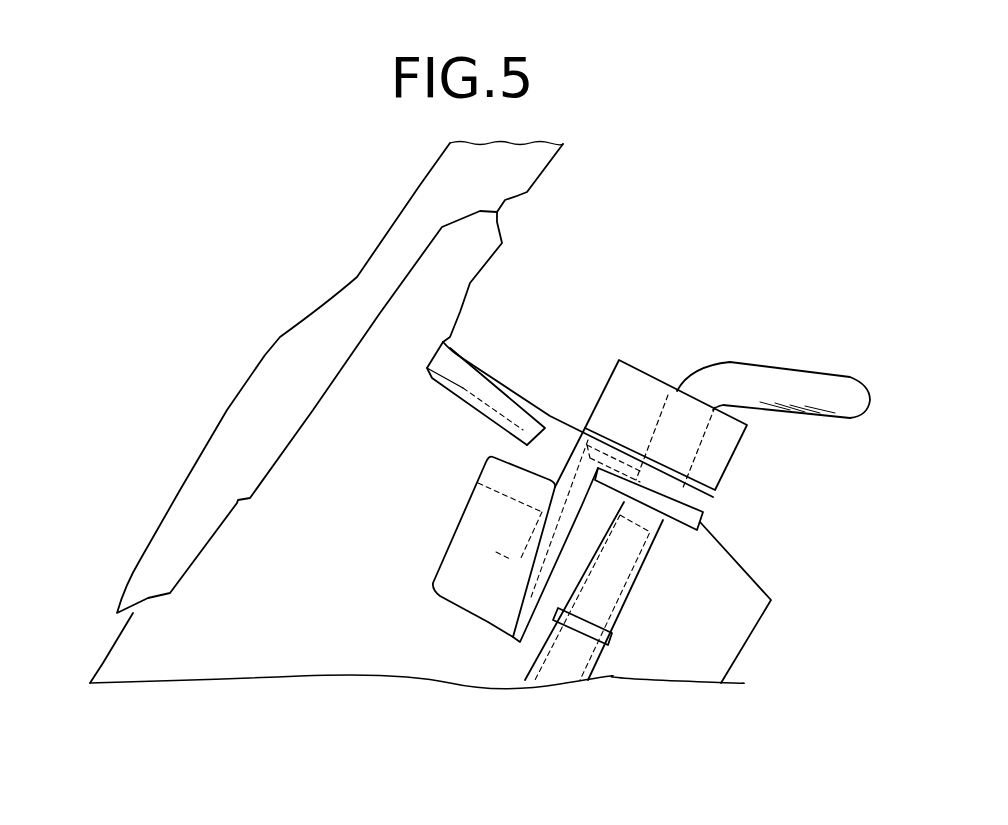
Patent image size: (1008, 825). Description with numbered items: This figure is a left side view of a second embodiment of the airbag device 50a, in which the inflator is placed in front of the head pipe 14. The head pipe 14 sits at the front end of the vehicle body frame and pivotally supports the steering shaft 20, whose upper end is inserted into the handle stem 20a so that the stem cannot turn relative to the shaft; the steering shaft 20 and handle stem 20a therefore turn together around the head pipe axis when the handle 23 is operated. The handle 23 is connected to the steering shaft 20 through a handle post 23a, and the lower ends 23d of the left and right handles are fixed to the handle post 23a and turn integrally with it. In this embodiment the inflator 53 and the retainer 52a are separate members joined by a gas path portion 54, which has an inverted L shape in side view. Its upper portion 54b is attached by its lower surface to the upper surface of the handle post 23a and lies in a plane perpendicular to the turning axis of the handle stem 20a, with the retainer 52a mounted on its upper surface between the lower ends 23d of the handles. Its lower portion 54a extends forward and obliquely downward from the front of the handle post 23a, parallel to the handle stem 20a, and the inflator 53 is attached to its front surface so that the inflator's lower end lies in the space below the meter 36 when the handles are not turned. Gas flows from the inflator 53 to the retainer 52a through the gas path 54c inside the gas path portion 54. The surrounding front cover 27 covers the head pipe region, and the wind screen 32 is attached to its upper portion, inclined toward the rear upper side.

The head pipe 14 is at (596, 645).
The steering shaft 20 is at (603, 613).
The handle stem 20a is at (637, 567).
The handle 23 is at (790, 383).
The handle post 23a is at (703, 527).
The lower ends of handles 23d is at (713, 462).
The front cover 27 is at (157, 632).
The wind screen 32 is at (225, 435).
The meter 36 is at (490, 358).
The airbag device 50a is at (607, 337).
The retainer 52a is at (667, 397).
The inflator 53 is at (465, 533).
The gas path portion 54 is at (505, 622).
The lower portion 54a is at (478, 483).
The upper portion 54b is at (690, 498).
The gas path 54c is at (580, 470).